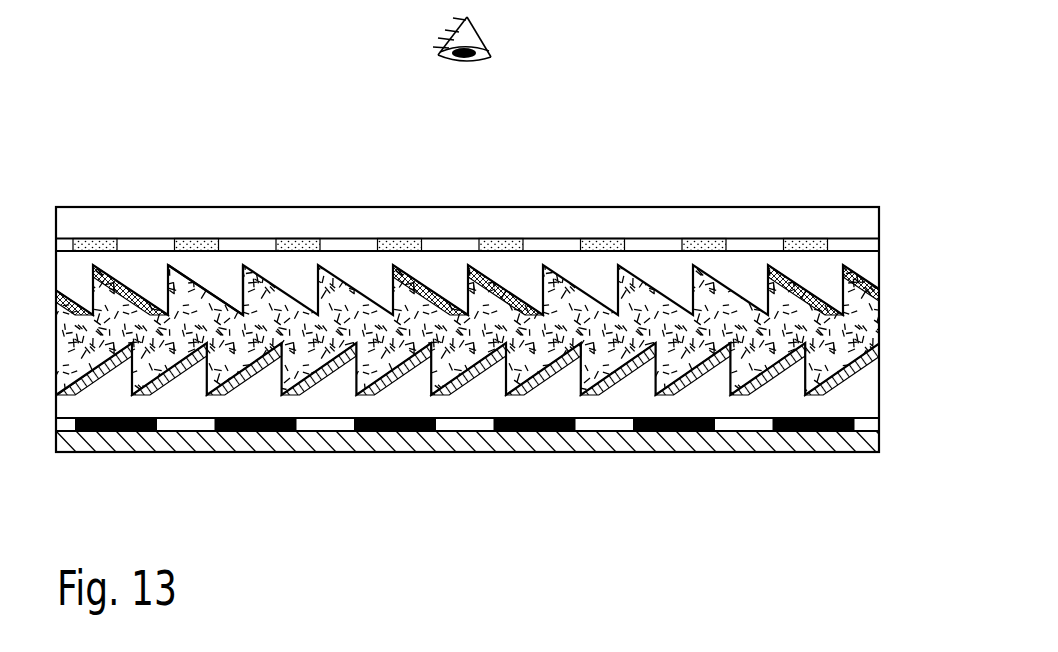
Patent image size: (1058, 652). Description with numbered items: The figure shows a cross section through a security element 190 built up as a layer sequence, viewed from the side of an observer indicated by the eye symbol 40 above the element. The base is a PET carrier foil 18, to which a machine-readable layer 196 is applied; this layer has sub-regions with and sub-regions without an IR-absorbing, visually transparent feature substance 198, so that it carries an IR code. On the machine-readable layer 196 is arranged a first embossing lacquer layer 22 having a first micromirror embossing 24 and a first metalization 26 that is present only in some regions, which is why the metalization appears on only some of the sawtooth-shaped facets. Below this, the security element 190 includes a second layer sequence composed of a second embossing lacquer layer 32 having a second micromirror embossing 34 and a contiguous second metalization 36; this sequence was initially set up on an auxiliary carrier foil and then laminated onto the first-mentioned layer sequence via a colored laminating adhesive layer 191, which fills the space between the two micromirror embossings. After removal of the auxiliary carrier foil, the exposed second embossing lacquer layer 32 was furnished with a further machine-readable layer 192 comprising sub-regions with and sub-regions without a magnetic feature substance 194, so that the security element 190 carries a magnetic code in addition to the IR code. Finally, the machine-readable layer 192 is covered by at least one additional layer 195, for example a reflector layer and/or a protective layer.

The security element 190 is at (102, 162).
The viewer 40 is at (477, 30).
The PET carrier foil 18 is at (447, 222).
The machine-readable layer 196 is at (868, 247).
The IR-absorbing, visually transparent feature substance 198 is at (800, 238).
The colored laminating adhesive layer 191 is at (872, 313).
The first metalization 26 is at (131, 278).
The first embossing lacquer layer 22 is at (868, 265).
The first micromirror embossing 24 is at (203, 278).
The second metalization 36 is at (172, 373).
The second micromirror embossing 34 is at (253, 370).
The second embossing lacquer layer 32 is at (102, 397).
The magnetic feature substance 194 is at (845, 417).
The further machine-readable layer 192 is at (868, 428).
The additional layer 195 is at (785, 443).